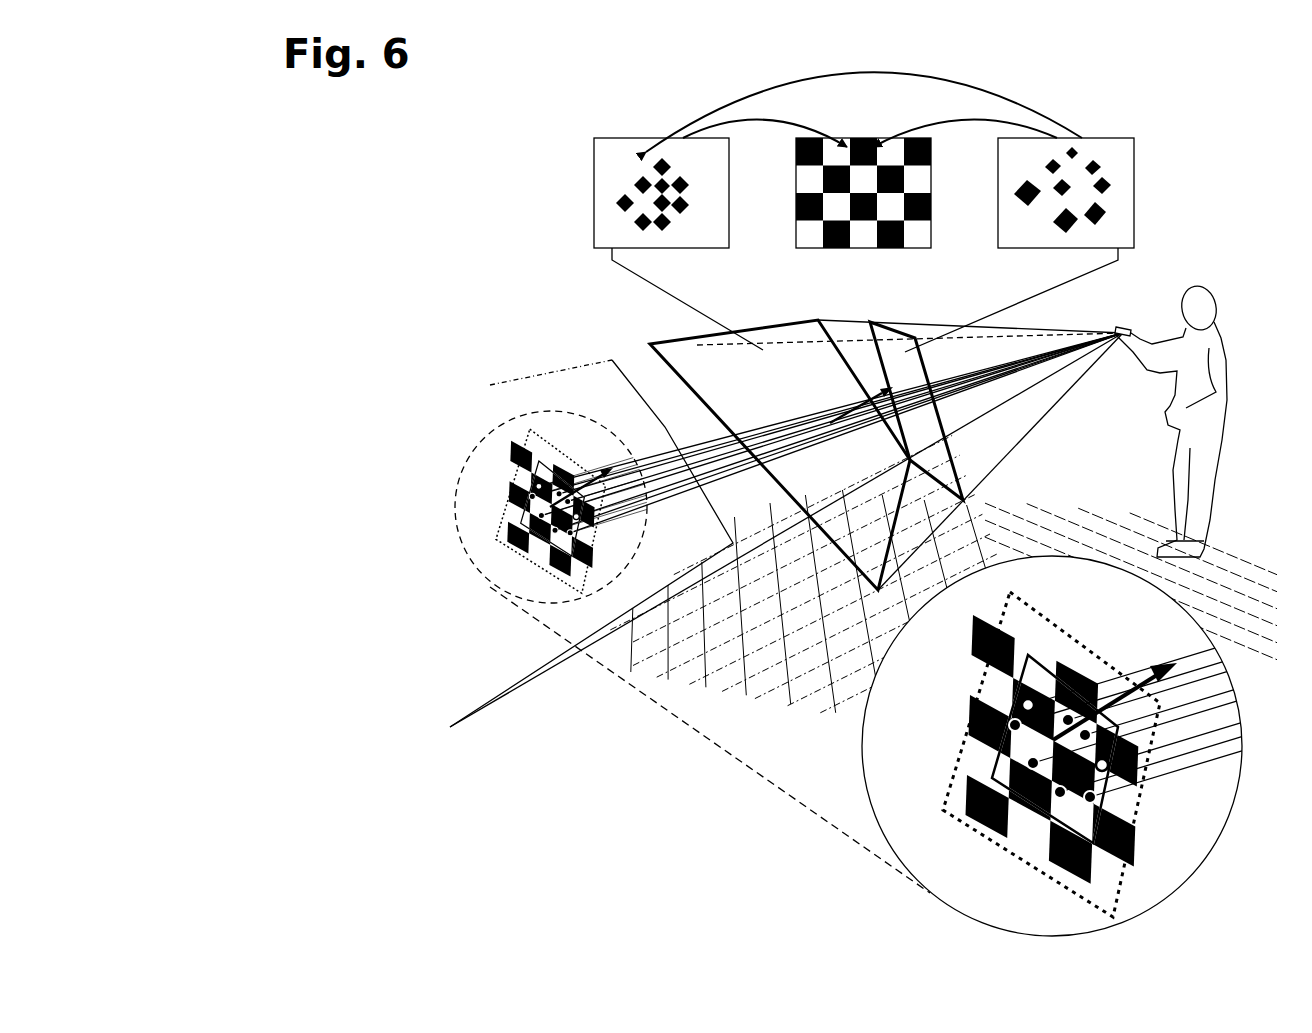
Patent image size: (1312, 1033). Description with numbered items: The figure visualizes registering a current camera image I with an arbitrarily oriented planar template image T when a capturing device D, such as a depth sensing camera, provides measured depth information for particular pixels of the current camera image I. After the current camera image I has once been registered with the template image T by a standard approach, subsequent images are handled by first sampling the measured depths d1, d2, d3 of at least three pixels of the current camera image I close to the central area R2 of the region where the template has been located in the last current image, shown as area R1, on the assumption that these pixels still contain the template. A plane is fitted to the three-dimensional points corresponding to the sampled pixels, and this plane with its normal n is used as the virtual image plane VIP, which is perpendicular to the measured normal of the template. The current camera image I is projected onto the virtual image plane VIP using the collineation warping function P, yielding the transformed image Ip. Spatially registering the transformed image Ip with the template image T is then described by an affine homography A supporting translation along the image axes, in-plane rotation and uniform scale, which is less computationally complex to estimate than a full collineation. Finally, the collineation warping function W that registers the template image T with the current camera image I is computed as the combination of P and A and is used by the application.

The virtual image plane VIP is at (656, 339).
The capturing device D is at (1148, 313).
The normal n is at (598, 455).
The area where the template has been in the last current image R1 is at (1097, 637).
The central area R2 is at (1042, 648).
The measured depth d1 is at (1010, 718).
The measured depth d2 is at (1028, 763).
The measured depth d3 is at (968, 817).
The collineation warping function P is at (864, 96).
The affine homography A is at (765, 119).
The collineation warping function W is at (965, 119).
The transformed image Ip is at (678, 244).
The template image T is at (863, 206).
The current camera image I is at (1019, 245).